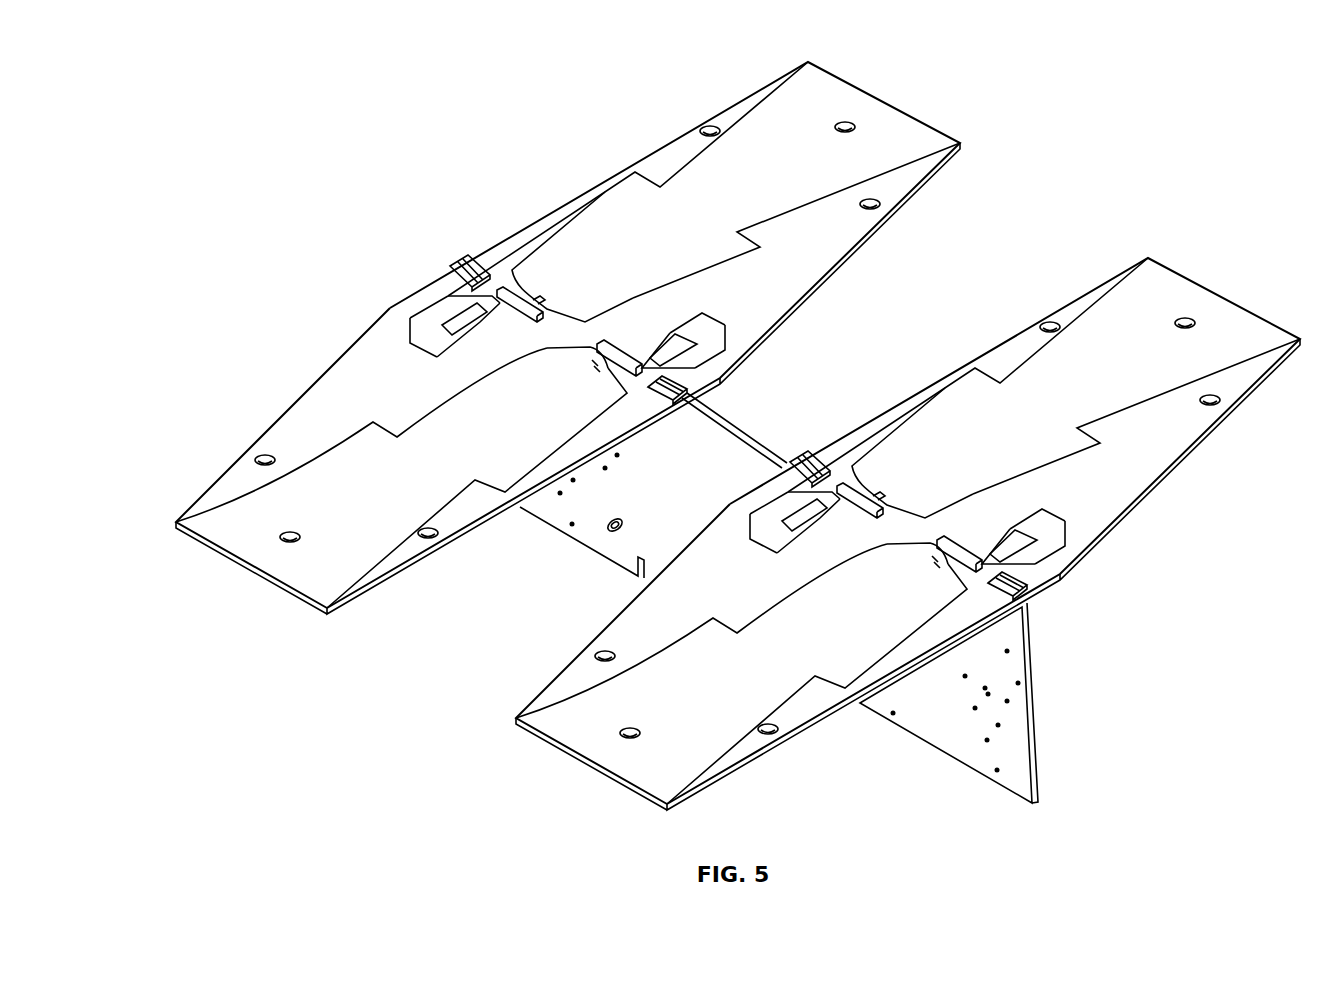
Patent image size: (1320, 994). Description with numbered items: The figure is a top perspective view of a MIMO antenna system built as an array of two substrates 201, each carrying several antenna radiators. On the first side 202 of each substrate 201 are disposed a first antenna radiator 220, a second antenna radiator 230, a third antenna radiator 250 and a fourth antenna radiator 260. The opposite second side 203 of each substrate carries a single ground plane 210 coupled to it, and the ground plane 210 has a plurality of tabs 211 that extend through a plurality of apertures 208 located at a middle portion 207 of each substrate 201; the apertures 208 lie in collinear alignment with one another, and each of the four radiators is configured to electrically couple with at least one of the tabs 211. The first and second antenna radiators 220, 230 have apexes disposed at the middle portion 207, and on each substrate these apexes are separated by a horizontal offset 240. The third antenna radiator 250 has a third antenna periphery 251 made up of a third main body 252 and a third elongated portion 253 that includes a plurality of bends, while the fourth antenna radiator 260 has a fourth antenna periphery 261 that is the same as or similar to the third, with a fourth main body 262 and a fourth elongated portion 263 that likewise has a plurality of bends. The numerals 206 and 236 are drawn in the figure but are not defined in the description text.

The substrate 201 is at (910, 178).
The first side 202 is at (308, 410).
The second side 203 is at (512, 508).
The mounting hole 206 is at (855, 122).
The middle portion 207 is at (460, 257).
The apertures 208 is at (630, 740).
The ground plane 210 is at (607, 550).
The tabs 211 is at (455, 270).
The first antenna radiator 220 is at (628, 198).
The second antenna radiator 230 is at (220, 538).
The mounting hole 236 is at (708, 124).
The horizontal offset 240 is at (742, 380).
The third antenna radiator 250 is at (702, 318).
The third antenna periphery 251 is at (712, 320).
The third main body 252 is at (727, 345).
The third elongated portion 253 is at (690, 360).
The fourth antenna radiator 260 is at (427, 335).
The fourth antenna periphery 261 is at (408, 338).
The fourth main body 262 is at (450, 304).
The fourth elongated portion 263 is at (483, 318).